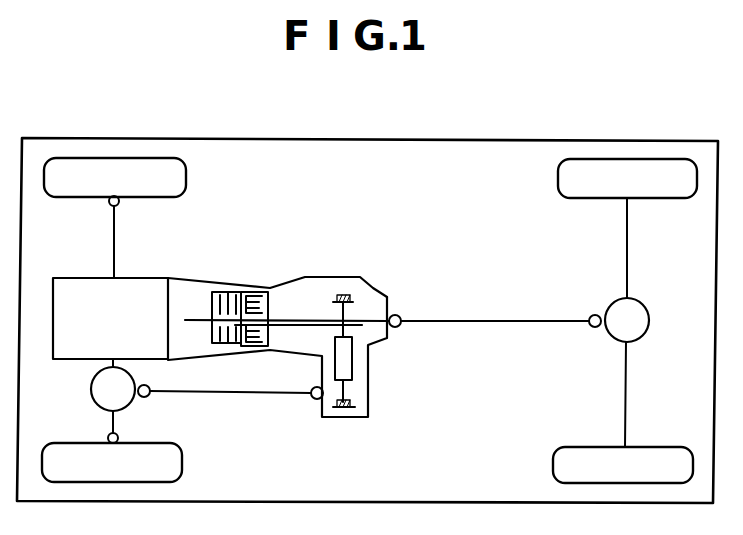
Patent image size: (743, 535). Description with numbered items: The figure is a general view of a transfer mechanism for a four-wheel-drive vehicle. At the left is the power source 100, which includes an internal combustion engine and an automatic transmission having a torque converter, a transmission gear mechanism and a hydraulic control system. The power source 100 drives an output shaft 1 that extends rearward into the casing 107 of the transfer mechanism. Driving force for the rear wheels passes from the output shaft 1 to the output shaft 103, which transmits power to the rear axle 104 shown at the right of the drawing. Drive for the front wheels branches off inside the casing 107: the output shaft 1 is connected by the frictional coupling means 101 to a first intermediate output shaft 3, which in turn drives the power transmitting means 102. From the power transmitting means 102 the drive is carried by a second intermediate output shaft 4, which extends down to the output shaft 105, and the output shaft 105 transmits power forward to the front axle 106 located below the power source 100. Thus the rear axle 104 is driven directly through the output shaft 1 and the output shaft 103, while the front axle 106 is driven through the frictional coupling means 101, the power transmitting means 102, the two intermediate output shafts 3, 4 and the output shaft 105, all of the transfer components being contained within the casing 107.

The output shaft of the power source 1 is at (197, 316).
The first intermediate output shaft 3 is at (308, 316).
The second intermediate output shaft 4 is at (352, 395).
The power source 100 is at (147, 279).
The frictional coupling means 101 is at (230, 290).
The power transmitting means 102 is at (343, 294).
The output shaft 103 is at (507, 319).
The rear axle 104 is at (627, 268).
The output shaft 105 is at (281, 395).
The front axle 106 is at (100, 404).
The casing 107 is at (285, 283).